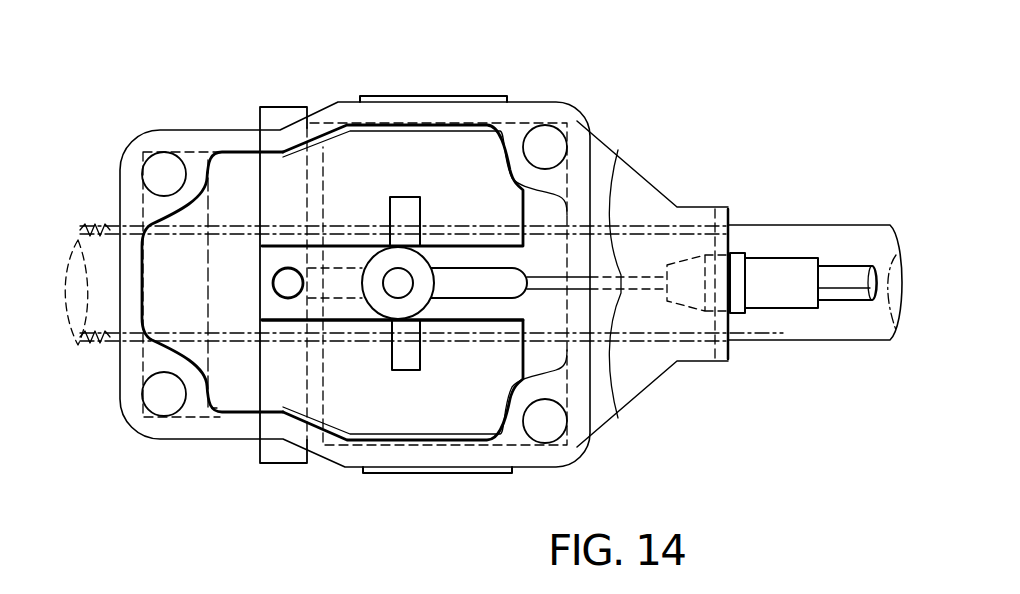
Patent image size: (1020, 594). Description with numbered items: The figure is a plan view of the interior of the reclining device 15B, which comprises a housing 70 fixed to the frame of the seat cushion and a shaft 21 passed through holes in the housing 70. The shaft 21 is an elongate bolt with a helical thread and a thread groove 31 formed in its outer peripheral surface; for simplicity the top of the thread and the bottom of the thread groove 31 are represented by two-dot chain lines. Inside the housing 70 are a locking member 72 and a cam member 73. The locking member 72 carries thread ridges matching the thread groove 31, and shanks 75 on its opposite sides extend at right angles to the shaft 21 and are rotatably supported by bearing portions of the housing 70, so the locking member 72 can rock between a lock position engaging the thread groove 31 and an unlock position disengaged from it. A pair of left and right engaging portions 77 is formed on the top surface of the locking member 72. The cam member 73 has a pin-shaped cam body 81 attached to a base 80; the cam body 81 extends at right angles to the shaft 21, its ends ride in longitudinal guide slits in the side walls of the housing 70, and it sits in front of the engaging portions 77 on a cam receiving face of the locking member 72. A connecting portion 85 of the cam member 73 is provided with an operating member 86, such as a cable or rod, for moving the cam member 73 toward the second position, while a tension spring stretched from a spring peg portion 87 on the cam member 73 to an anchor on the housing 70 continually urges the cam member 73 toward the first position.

The reclining device 15B is at (682, 114).
The shaft 21 is at (762, 320).
The thread groove 31 is at (103, 345).
The housing 70 is at (545, 101).
The locking member 72 is at (402, 420).
The cam member 73 is at (243, 209).
The shanks 75 is at (457, 96).
The engaging portions 77 is at (415, 202).
The base 80 is at (357, 312).
The cam body 81 is at (283, 107).
The connecting portion 85 is at (390, 280).
The operating member 86 is at (645, 275).
The spring peg portion 87 is at (280, 280).